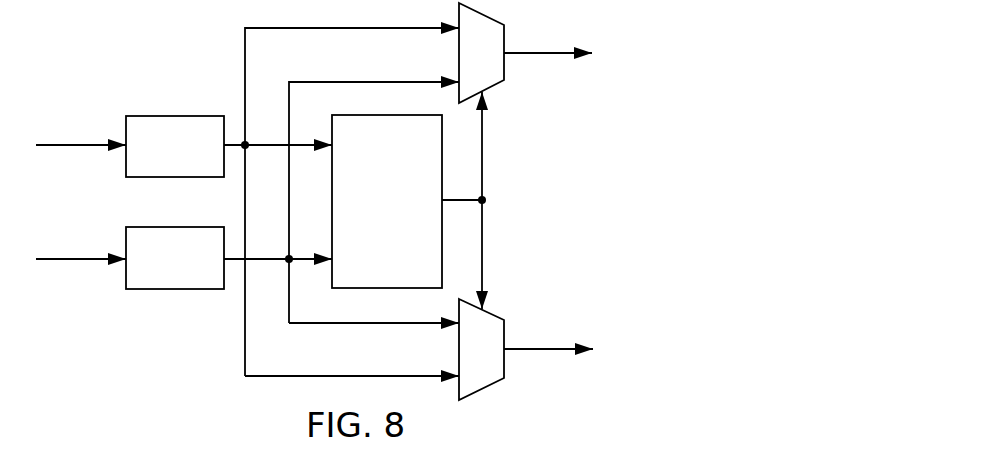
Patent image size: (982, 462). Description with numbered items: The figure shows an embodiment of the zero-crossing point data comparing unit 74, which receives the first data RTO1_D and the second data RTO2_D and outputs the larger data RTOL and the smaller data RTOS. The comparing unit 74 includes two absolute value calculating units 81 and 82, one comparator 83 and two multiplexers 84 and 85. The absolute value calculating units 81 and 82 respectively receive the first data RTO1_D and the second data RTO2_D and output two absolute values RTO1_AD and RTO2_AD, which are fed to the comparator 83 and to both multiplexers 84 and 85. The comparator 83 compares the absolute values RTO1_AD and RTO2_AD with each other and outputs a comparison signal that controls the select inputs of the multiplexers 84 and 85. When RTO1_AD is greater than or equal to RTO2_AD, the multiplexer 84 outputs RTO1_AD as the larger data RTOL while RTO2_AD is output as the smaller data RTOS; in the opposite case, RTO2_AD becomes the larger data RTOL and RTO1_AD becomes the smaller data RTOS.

The zero-crossing point data comparing unit 74 is at (102, 333).
The absolute value calculating unit 81 is at (173, 122).
The absolute value calculating unit 82 is at (167, 282).
The comparator 83 is at (402, 257).
The multiplexer 84 is at (497, 71).
The multiplexer 85 is at (497, 338).